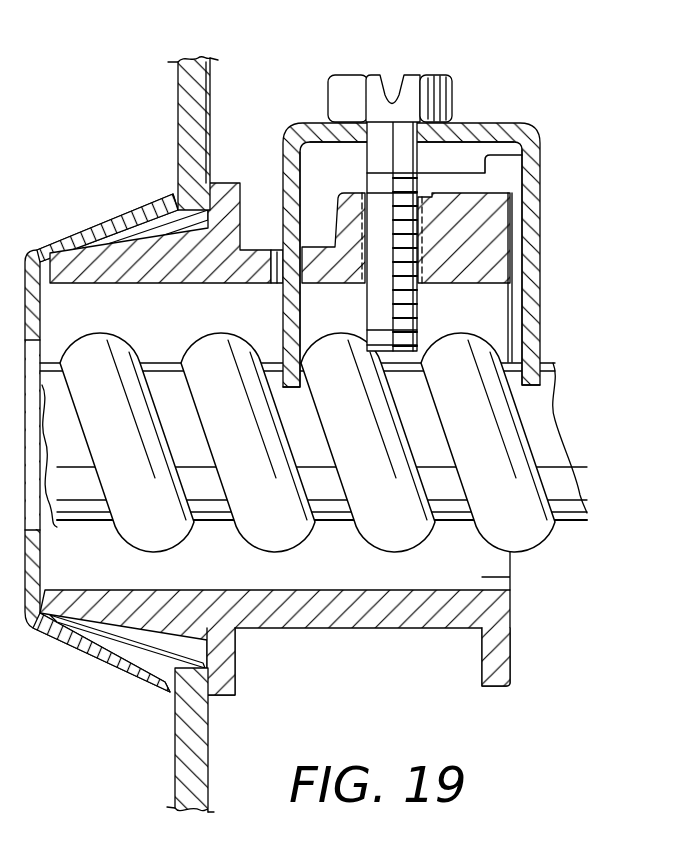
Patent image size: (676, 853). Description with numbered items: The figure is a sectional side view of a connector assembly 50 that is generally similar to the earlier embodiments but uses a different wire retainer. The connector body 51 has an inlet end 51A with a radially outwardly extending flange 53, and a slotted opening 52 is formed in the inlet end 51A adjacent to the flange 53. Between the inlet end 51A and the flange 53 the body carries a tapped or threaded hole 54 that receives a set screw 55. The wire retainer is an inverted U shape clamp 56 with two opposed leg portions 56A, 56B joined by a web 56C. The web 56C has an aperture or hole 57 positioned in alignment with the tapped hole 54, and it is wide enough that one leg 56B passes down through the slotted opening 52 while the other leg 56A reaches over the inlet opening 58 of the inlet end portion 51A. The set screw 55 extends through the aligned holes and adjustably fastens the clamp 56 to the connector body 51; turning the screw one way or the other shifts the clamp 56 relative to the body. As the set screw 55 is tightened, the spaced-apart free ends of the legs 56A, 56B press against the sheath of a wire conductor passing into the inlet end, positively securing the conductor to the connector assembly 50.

The connector assembly 50 is at (90, 682).
The connector body 51 is at (366, 630).
The inlet end 51A is at (511, 597).
The slotted opening 52 is at (268, 250).
The radially outwardly extending flange 53 is at (238, 692).
The tapped or threaded hole 54 is at (500, 228).
The set screw 55 is at (487, 160).
The inverted U shape clamp 56 is at (403, 205).
The leg portion 56A is at (540, 313).
The leg portion 56B is at (283, 313).
The web 56C is at (480, 122).
The aperture or hole 57 is at (355, 75).
The inlet opening 58 is at (511, 560).